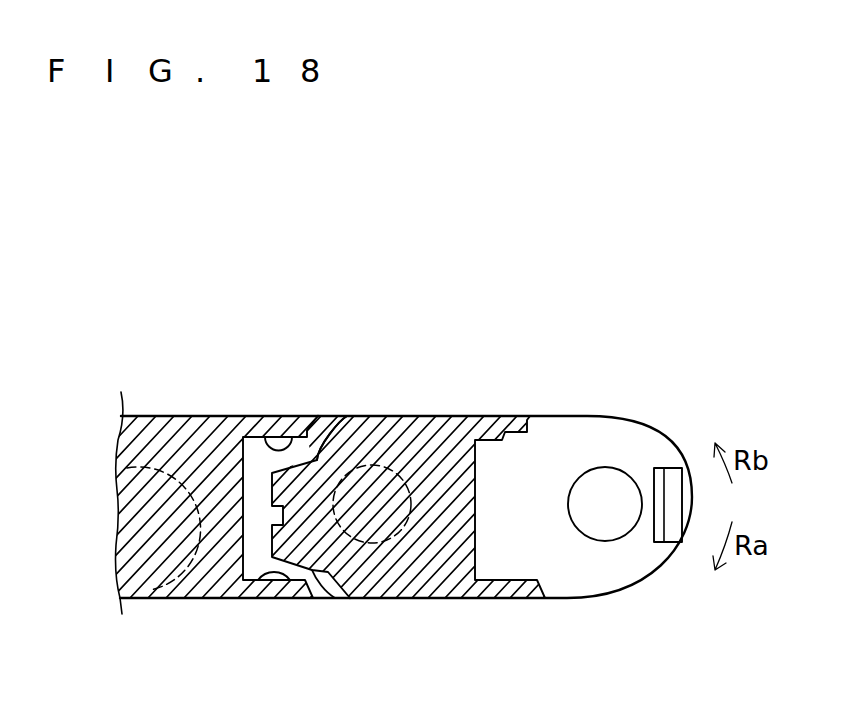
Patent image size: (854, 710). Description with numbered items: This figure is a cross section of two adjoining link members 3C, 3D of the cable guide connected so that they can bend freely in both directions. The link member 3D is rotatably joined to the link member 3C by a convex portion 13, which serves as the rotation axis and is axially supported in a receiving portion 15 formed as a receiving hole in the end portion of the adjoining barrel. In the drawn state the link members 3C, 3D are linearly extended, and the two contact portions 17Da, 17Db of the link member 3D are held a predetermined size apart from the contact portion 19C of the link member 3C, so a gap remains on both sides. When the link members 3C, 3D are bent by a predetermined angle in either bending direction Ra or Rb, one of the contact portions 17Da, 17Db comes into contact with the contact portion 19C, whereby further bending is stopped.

The link member 3C is at (182, 416).
The link member 3D is at (587, 416).
The contact portion 19C is at (293, 437).
The contact portion 17Da is at (347, 416).
The contact portion 17Db is at (335, 598).
The convex portion 13 is at (155, 600).
The receiving portion 15 is at (606, 541).